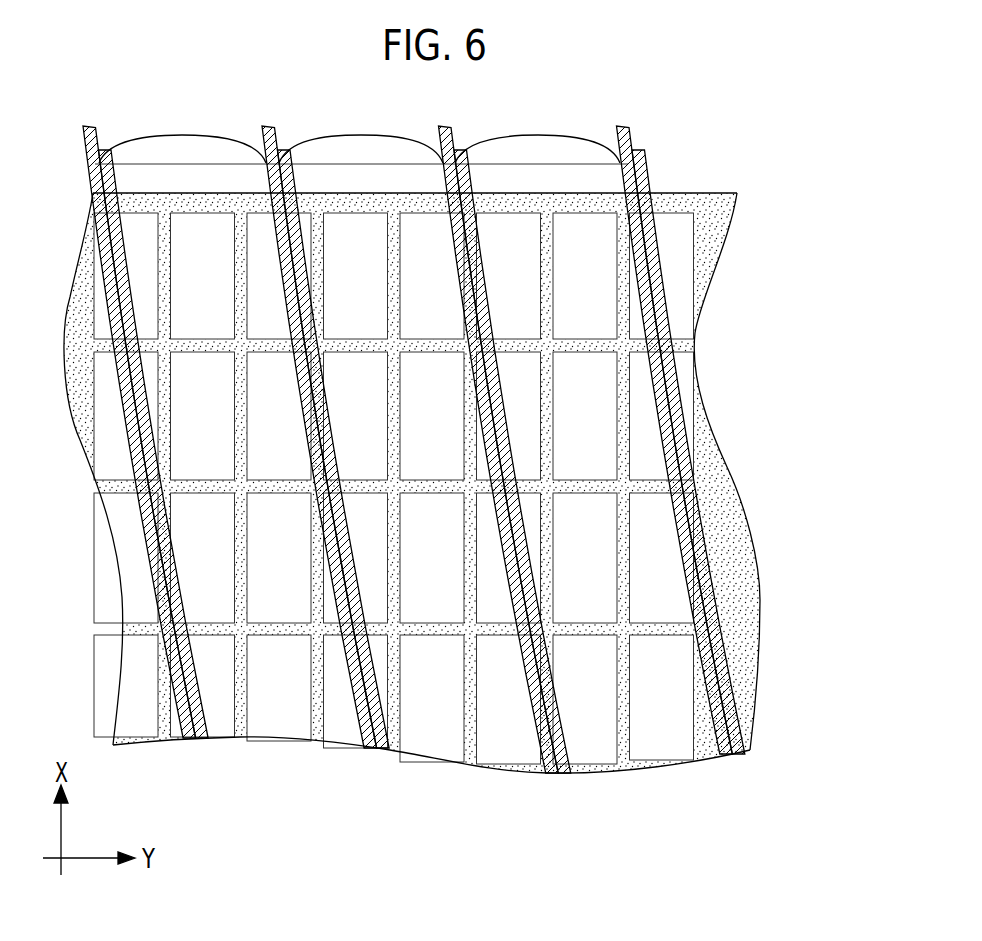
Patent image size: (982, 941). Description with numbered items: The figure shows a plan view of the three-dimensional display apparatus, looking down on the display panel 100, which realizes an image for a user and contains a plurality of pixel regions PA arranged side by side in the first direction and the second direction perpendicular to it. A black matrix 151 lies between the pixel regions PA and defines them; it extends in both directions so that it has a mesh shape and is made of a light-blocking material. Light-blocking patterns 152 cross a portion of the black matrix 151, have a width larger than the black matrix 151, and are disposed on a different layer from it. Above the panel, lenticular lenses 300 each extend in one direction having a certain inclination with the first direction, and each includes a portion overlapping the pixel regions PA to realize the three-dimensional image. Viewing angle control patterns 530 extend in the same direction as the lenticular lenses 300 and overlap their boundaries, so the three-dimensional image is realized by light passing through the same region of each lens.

The display panel 100 is at (701, 181).
The black matrix 151 is at (722, 215).
The light-blocking patterns 152 is at (710, 558).
The pixel regions PA is at (695, 284).
The lenticular lenses 300 is at (362, 145).
The viewing angle control patterns 530 is at (621, 126).